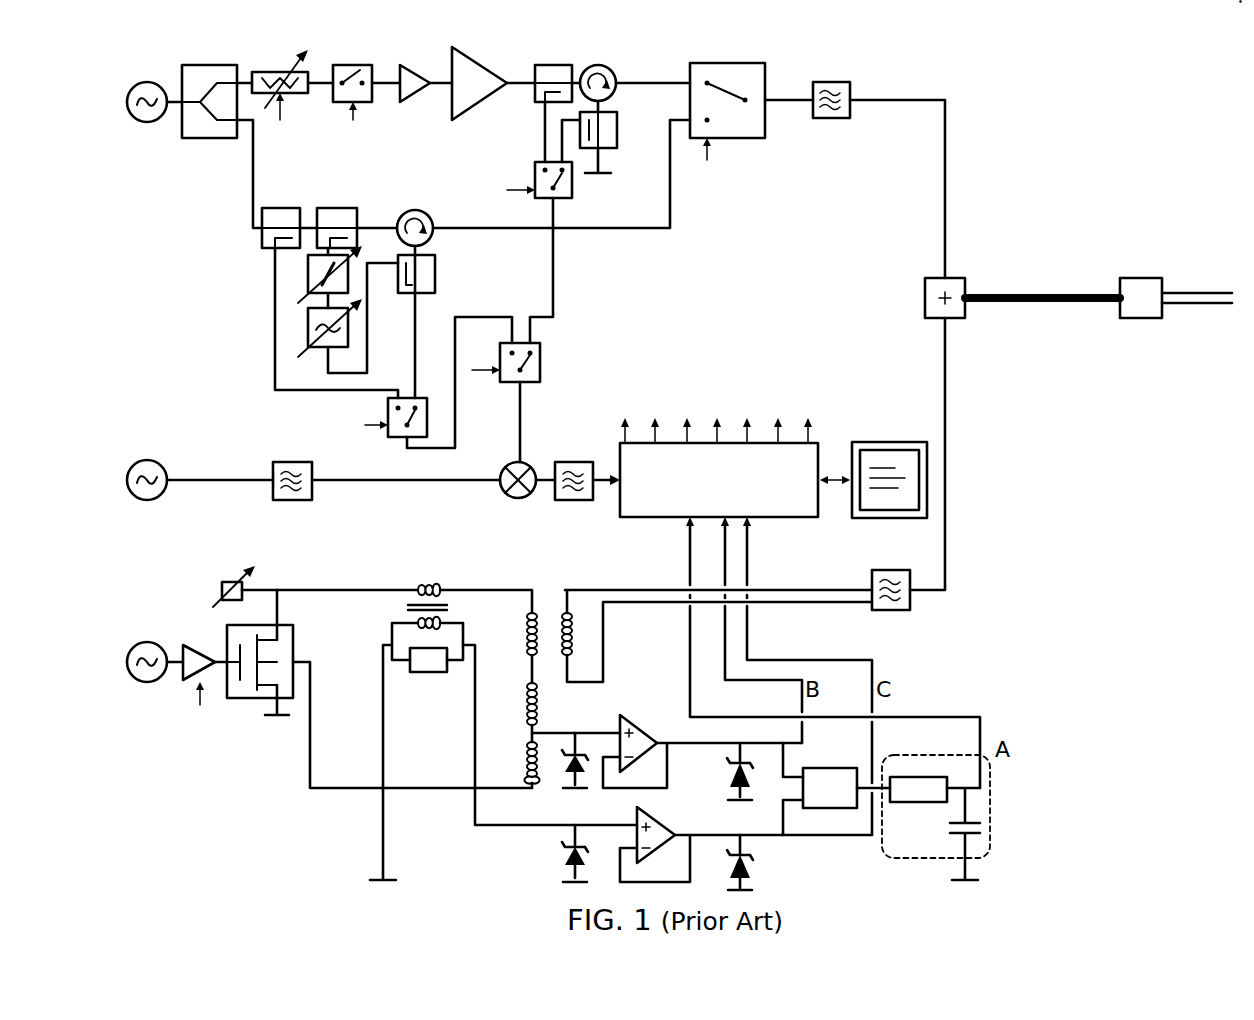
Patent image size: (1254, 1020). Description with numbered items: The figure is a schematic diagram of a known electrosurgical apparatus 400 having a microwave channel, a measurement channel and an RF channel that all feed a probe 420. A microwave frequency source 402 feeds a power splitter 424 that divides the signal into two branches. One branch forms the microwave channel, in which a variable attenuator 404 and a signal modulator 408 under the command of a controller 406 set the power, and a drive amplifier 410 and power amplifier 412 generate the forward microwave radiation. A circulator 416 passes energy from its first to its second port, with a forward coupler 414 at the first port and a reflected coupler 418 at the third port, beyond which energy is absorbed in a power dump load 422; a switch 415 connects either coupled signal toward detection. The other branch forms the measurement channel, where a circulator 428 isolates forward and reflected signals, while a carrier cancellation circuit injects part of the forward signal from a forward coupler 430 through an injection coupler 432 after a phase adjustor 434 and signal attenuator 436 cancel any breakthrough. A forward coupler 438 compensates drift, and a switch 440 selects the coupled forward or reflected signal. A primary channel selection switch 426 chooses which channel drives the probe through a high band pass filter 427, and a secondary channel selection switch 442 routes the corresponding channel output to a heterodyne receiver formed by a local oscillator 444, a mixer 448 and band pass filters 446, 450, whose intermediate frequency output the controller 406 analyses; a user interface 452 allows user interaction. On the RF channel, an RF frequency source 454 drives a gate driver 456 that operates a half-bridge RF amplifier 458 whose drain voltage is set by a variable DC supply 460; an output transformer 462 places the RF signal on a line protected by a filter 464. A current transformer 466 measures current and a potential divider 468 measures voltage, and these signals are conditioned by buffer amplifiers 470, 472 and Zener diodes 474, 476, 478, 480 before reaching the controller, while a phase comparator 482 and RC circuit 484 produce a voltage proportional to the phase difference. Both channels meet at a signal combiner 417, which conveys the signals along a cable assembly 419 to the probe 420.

The electrosurgical apparatus 400 is at (1148, 137).
The microwave frequency source 402 is at (147, 80).
The variable attenuator 404 is at (270, 70).
The controller 406 is at (731, 475).
The signal modulator 408 is at (350, 64).
The drive amplifier 410 is at (415, 64).
The power amplifier 412 is at (485, 62).
The forward coupler 414 is at (552, 64).
The switch 415 is at (533, 165).
The circulator 416 is at (610, 65).
The signal combiner 417 is at (955, 277).
The reflected coupler 418 is at (620, 136).
The cable assembly 419 is at (1045, 292).
The probe 420 is at (1142, 277).
The power dump load 422 is at (600, 176).
The power splitter 424 is at (213, 64).
The primary channel selection switch 426 is at (728, 62).
The high band pass filter 427 is at (838, 80).
The circulator 428 is at (422, 210).
The forward coupler 430 is at (342, 207).
The injection coupler 432 is at (436, 275).
The phase adjustor 434 is at (306, 280).
The signal attenuator 436 is at (306, 330).
The forward coupler 438 is at (280, 207).
The switch 440 is at (430, 435).
The secondary channel selection switch 442 is at (542, 370).
The local oscillator 444 is at (145, 460).
The band pass filter 446 is at (295, 502).
The mixer 448 is at (512, 500).
The band pass filter 450 is at (575, 502).
The user interface 452 is at (875, 440).
The RF frequency source 454 is at (147, 685).
The gate driver 456 is at (185, 645).
The RF amplifier 458 is at (295, 640).
The variable DC supply 460 is at (225, 582).
The output transformer 462 is at (478, 660).
The filter 464 is at (890, 612).
The current transformer 466 is at (412, 588).
The potential divider 468 is at (510, 735).
The buffer amplifier 470 is at (638, 718).
The buffer amplifier 472 is at (665, 825).
The Zener diode 474 is at (568, 775).
The Zener diode 476 is at (748, 770).
The Zener diode 478 is at (560, 868).
The Zener diode 480 is at (752, 875).
The phase comparator 482 is at (830, 810).
The RC circuit 484 is at (992, 808).